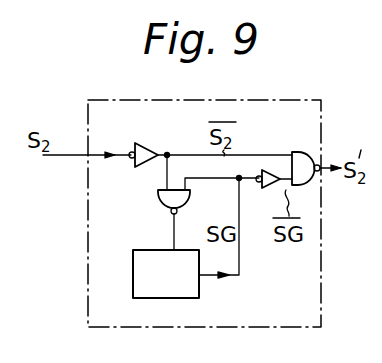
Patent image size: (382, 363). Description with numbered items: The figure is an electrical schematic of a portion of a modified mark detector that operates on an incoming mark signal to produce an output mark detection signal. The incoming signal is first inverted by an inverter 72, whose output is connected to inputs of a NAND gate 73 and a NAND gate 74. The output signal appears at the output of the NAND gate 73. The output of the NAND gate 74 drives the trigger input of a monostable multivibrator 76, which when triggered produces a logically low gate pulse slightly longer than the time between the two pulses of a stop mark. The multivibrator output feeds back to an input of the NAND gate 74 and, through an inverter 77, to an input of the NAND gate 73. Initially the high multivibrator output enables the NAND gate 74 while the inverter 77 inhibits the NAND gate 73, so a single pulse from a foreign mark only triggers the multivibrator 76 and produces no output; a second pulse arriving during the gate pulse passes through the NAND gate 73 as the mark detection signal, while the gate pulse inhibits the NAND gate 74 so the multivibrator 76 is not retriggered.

The inverter 72 is at (150, 142).
The NAND gate 73 is at (310, 152).
The NAND gate 74 is at (158, 200).
The monostable multivibrator 76 is at (133, 285).
The inverter 77 is at (273, 170).